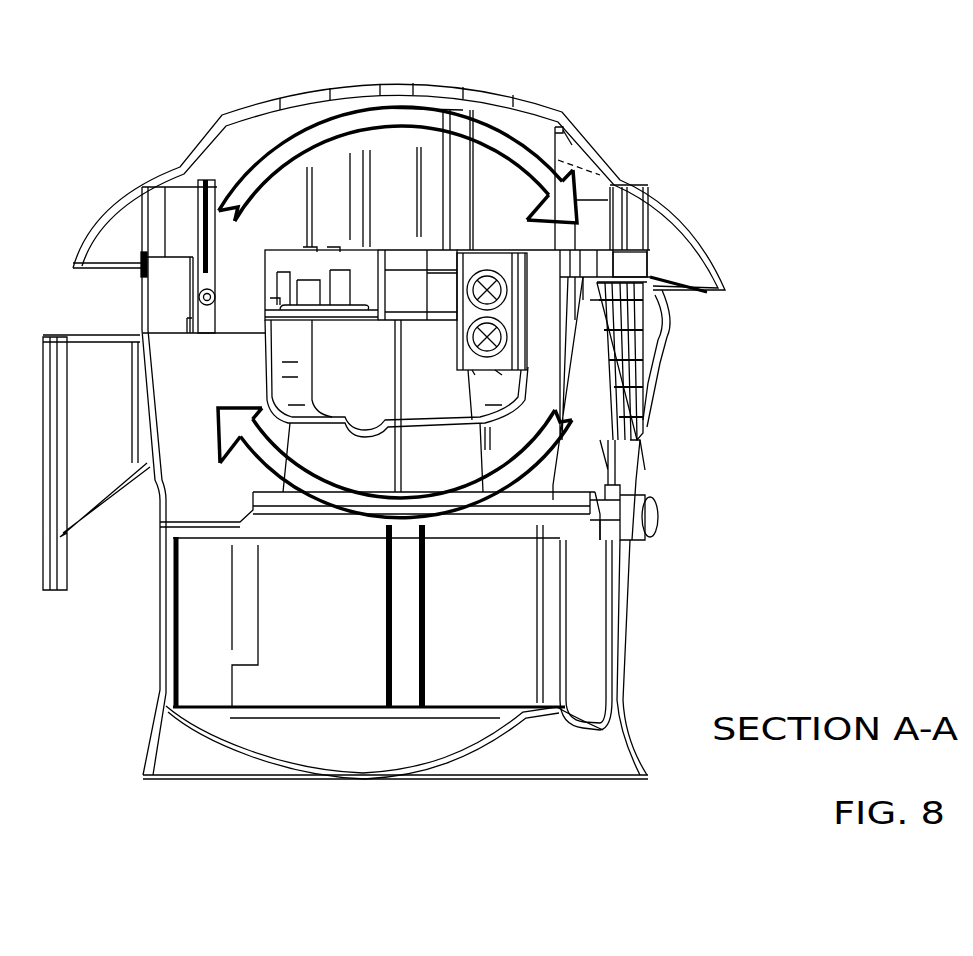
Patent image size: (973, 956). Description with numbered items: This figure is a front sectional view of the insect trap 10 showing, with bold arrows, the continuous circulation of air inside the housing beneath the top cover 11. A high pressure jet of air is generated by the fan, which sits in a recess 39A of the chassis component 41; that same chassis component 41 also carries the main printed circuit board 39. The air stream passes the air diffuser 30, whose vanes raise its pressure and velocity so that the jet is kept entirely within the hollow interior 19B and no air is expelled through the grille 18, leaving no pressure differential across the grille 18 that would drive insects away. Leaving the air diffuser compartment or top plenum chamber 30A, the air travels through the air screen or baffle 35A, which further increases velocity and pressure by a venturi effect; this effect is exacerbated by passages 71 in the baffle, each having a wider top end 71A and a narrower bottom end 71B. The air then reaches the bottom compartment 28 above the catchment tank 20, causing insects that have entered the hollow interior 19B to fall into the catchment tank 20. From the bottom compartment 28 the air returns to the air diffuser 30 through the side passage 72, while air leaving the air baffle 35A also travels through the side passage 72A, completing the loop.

The insect trap 10 is at (693, 515).
The top cover 11 is at (420, 83).
The grille 18 is at (643, 357).
The hollow interior 19B is at (640, 390).
The catchment tank 20 is at (335, 631).
The bottom compartment 28 is at (455, 527).
The air diffuser 30 is at (505, 125).
The air diffuser compartment or top plenum chamber 30A is at (285, 220).
The air screen or baffle 35A is at (607, 257).
The main printed circuit board 39 is at (334, 298).
The recess 39A is at (405, 249).
The chassis component 41 is at (417, 322).
The passages 71 is at (590, 257).
The wider top end 71A is at (583, 253).
The narrower bottom end 71B is at (575, 277).
The side passage 72 is at (213, 390).
The side passage 72A is at (580, 343).